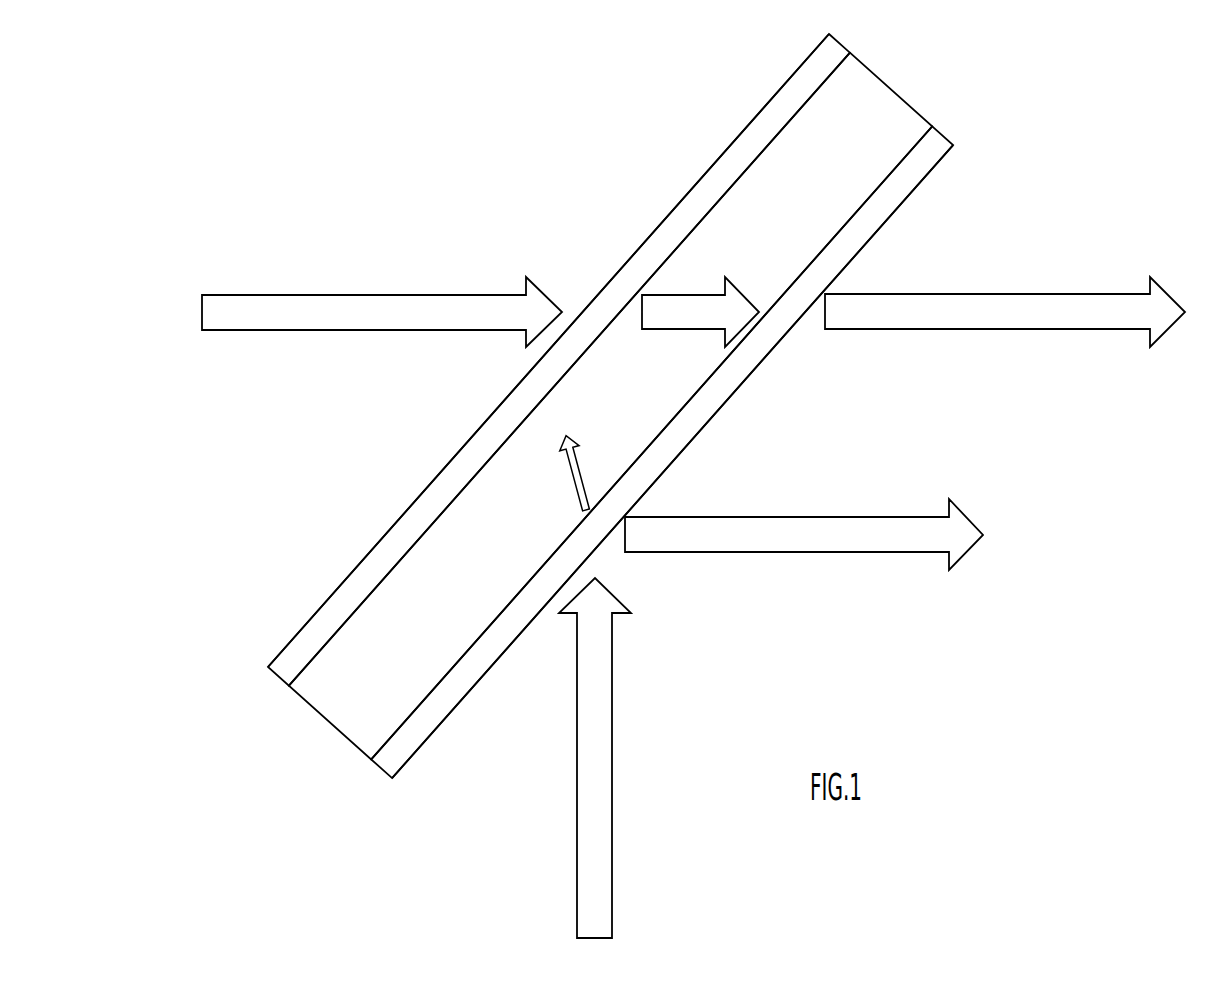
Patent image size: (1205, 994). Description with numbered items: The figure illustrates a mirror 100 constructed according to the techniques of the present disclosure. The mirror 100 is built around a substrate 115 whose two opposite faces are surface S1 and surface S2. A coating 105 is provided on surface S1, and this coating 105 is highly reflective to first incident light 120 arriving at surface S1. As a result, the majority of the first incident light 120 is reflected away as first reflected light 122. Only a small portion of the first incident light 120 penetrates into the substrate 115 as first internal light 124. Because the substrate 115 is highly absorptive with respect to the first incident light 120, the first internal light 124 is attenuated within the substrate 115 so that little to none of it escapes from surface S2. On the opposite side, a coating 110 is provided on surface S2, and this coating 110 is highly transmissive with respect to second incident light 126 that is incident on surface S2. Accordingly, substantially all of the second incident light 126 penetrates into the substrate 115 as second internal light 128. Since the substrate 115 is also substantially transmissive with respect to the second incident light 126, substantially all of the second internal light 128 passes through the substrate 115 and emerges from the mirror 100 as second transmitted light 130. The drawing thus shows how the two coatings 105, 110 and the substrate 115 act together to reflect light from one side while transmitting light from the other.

The mirror 100 is at (964, 92).
The coating 105 is at (700, 420).
The coating 110 is at (282, 670).
The substrate 115 is at (868, 98).
The first incident light 120 is at (612, 712).
The first reflected light 122 is at (862, 552).
The first internal light 124 is at (572, 482).
The second incident light 126 is at (354, 293).
The second internal light 128 is at (682, 293).
The second transmitted light 130 is at (953, 293).
The surface S1 is at (422, 747).
The surface S2 is at (693, 183).